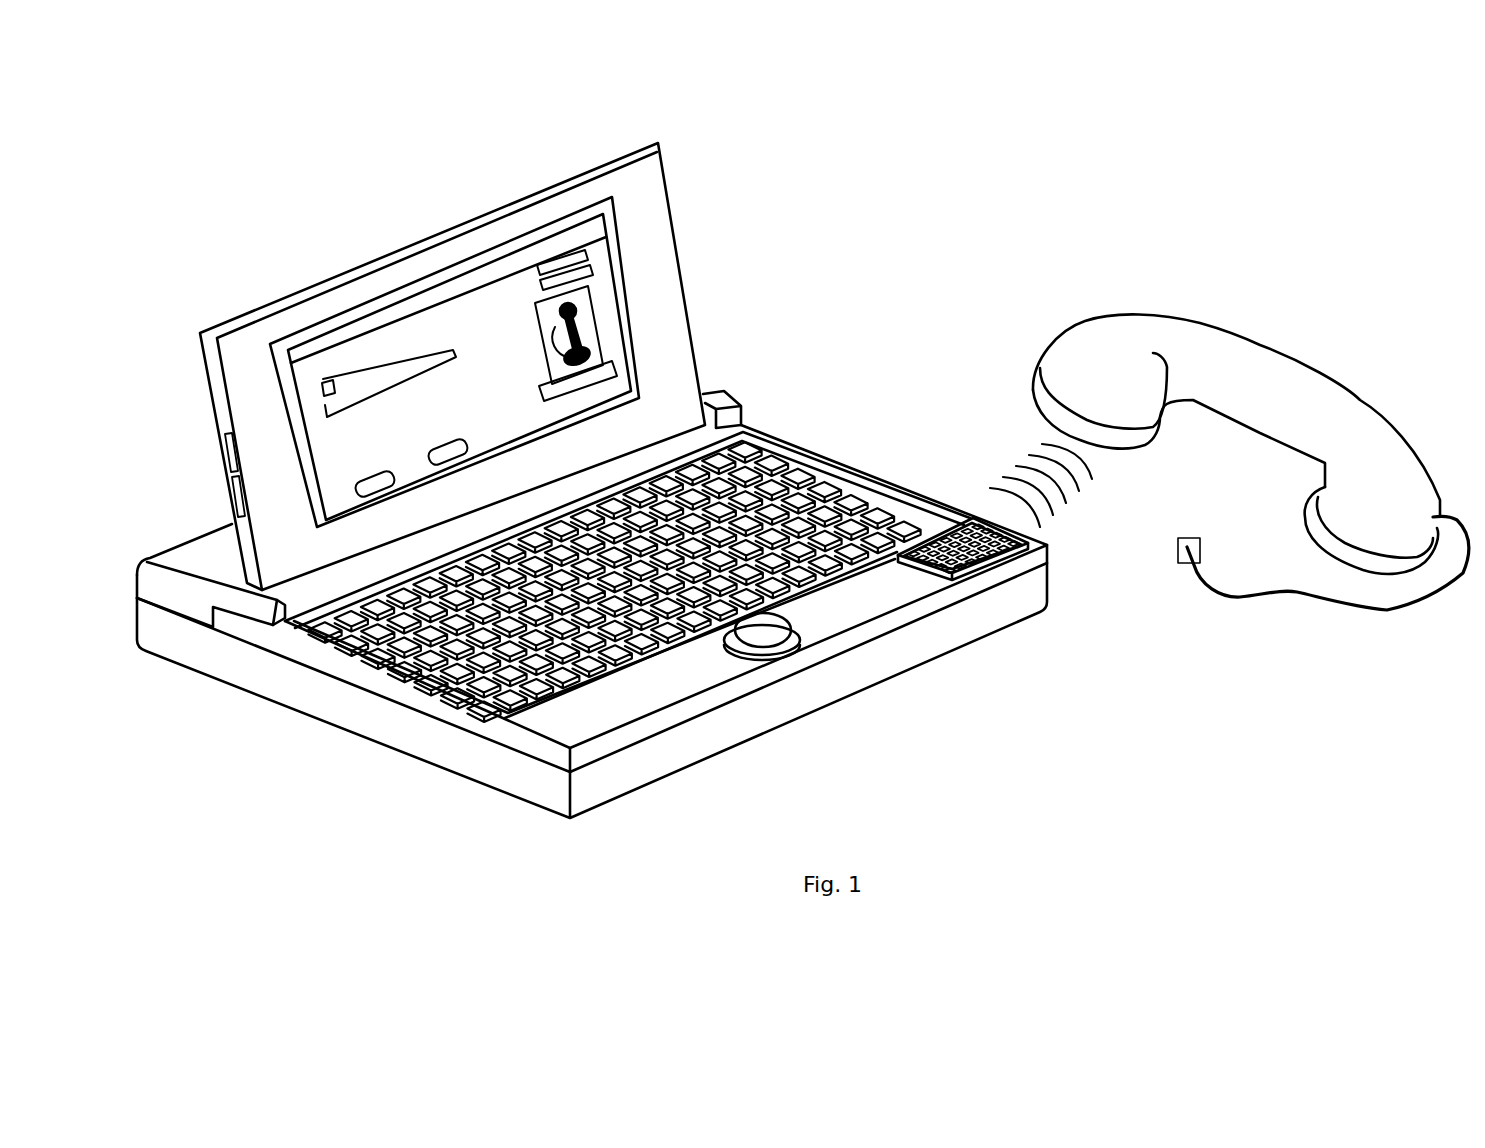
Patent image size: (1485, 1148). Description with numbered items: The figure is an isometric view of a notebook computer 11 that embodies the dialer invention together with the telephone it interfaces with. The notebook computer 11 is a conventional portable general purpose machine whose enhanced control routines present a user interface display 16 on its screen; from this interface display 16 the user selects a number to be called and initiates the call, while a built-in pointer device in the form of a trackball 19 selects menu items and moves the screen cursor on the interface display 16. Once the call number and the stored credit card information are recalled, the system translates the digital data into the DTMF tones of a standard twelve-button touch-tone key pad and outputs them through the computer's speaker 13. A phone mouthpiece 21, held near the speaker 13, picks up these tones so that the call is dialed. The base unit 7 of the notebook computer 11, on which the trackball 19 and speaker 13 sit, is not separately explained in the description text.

The computer base unit 7 is at (853, 462).
The display housing 11 is at (347, 245).
The speaker 13 is at (985, 518).
The display screen 16 is at (470, 331).
The trackball 19 is at (777, 628).
The telephone handset 21 is at (1033, 390).